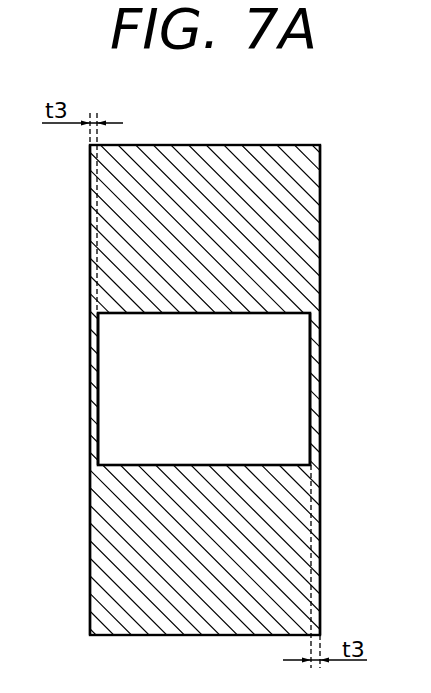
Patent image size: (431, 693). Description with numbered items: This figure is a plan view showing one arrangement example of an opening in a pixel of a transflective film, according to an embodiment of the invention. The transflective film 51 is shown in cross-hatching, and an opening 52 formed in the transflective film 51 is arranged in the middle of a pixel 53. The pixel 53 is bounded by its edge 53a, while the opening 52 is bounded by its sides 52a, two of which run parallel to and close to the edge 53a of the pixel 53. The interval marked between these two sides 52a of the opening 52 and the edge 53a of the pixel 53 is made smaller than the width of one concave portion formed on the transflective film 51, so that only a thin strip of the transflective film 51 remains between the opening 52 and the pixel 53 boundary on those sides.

The transflective film 51 is at (215, 354).
The opening 52 is at (283, 342).
The sides of the opening 52a is at (97, 418).
The pixel 53 is at (320, 182).
The edge of the pixel 53a is at (90, 362).